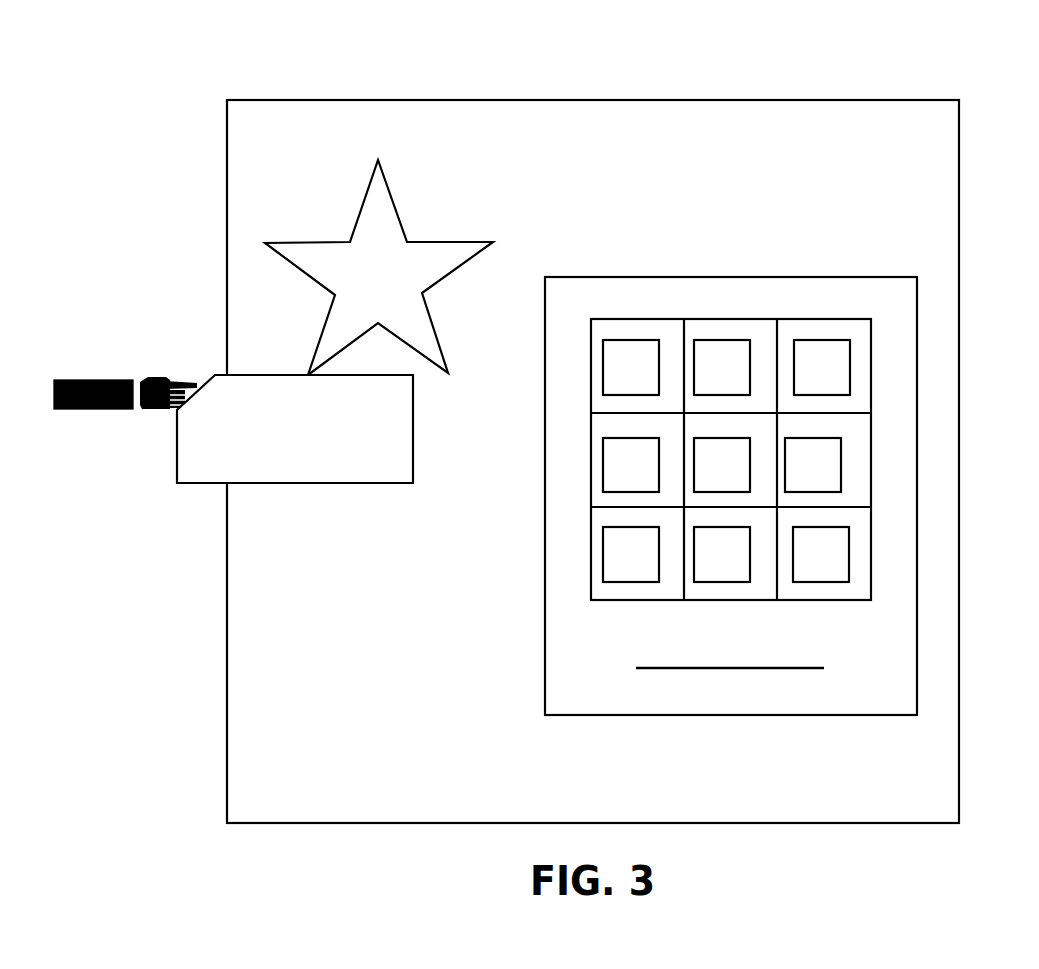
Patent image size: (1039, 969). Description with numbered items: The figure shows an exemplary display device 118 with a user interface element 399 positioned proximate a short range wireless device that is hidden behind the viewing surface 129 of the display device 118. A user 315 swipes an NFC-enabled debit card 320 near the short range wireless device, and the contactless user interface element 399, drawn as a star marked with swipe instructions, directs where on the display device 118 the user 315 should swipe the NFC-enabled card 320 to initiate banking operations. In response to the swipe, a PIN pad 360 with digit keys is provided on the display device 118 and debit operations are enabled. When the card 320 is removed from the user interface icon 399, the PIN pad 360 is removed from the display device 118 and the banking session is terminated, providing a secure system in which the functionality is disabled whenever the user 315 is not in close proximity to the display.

The viewing surface 129 is at (775, 142).
The display device 118 is at (570, 205).
The user interface element 399 is at (338, 223).
The user 315 is at (90, 376).
The NFC-enabled debit card 320 is at (177, 447).
The PIN pad 360 is at (922, 310).